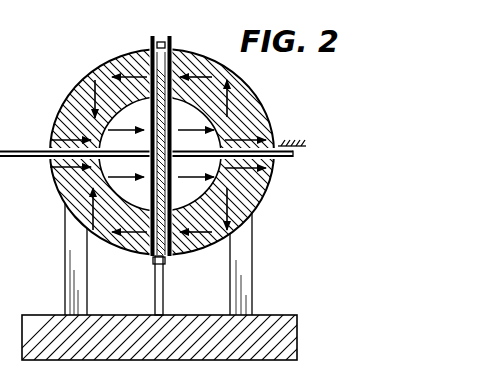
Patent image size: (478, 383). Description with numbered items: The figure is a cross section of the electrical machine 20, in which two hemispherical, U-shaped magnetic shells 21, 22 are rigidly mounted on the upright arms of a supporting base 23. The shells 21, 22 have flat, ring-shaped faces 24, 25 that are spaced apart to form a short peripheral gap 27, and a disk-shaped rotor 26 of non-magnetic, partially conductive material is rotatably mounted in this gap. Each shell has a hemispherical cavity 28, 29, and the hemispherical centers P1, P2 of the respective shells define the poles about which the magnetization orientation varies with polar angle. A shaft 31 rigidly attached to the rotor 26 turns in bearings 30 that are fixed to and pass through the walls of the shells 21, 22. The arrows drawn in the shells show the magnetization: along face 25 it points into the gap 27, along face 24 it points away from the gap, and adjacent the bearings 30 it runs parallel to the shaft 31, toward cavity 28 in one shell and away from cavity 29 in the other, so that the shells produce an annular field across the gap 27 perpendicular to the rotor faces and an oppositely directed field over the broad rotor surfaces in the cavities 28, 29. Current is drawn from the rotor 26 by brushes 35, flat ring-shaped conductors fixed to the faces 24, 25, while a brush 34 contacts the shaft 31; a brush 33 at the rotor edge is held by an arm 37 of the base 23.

The electrical machine 20 is at (118, 50).
The magnetic shell 21 is at (72, 100).
The magnetic shell 22 is at (250, 107).
The supporting base 23 is at (112, 315).
The ring-shaped face 24 is at (148, 217).
The ring-shaped face 25 is at (206, 208).
The rotor 26 is at (176, 62).
The peripheral gap 27 is at (267, 130).
The hemispherical cavity 28 is at (58, 196).
The hemispherical cavity 29 is at (263, 189).
The bearings 30 is at (39, 150).
The shaft 31 is at (26, 159).
The brush 33 is at (161, 41).
The brush 34 is at (305, 145).
The brushes 35 is at (171, 38).
The arm 37 is at (164, 296).
The hemispherical center P1 is at (140, 150).
The hemispherical center P2 is at (172, 150).